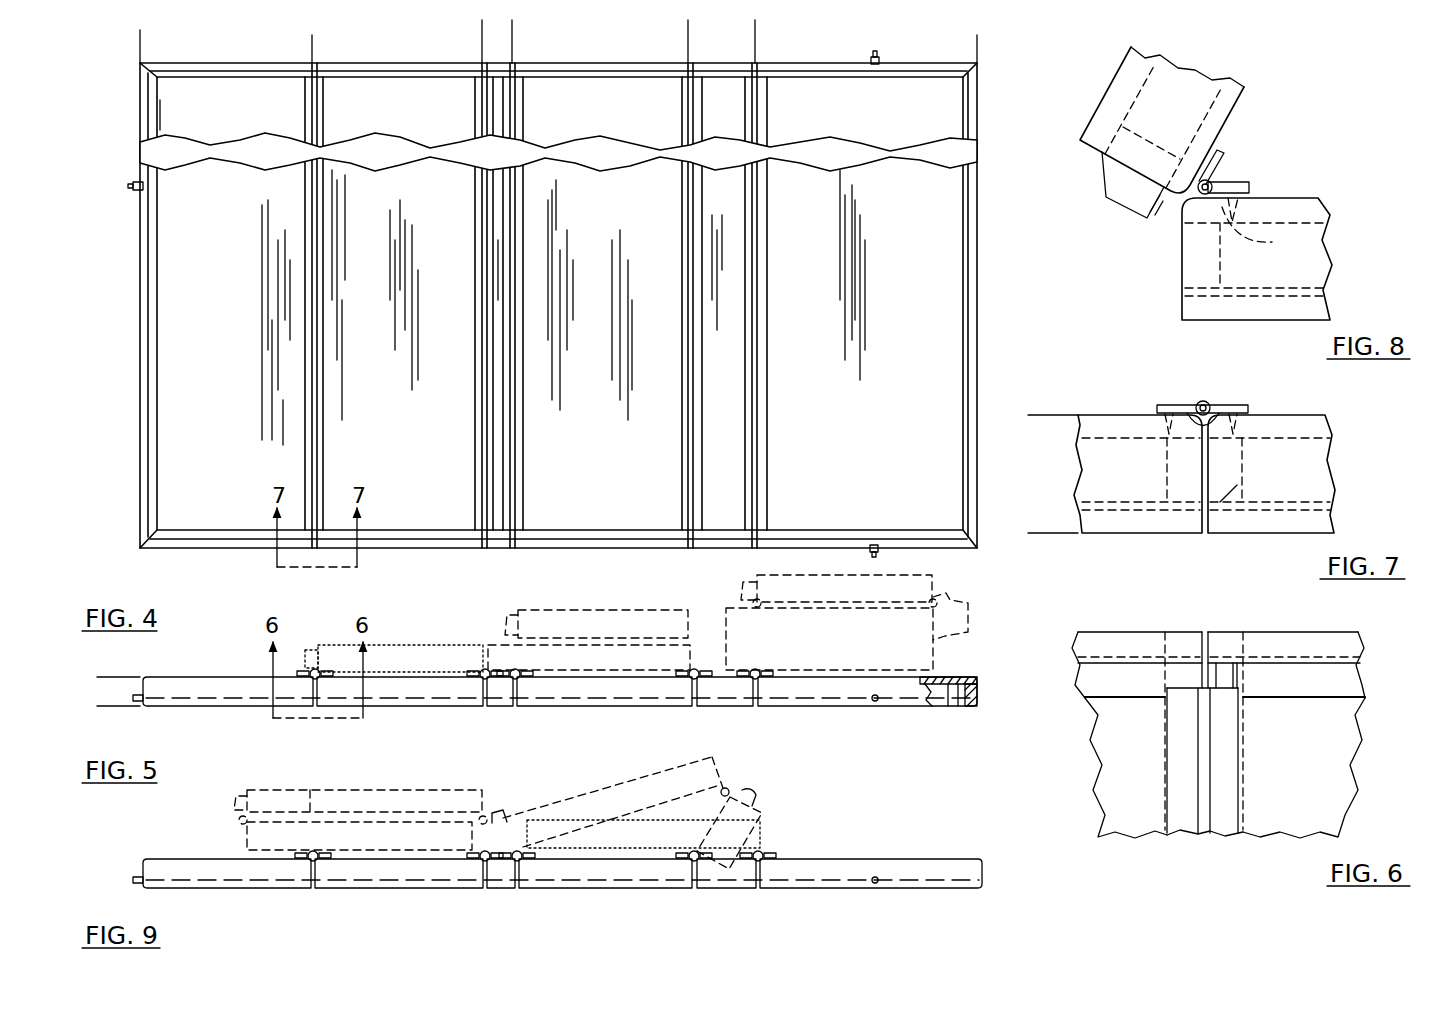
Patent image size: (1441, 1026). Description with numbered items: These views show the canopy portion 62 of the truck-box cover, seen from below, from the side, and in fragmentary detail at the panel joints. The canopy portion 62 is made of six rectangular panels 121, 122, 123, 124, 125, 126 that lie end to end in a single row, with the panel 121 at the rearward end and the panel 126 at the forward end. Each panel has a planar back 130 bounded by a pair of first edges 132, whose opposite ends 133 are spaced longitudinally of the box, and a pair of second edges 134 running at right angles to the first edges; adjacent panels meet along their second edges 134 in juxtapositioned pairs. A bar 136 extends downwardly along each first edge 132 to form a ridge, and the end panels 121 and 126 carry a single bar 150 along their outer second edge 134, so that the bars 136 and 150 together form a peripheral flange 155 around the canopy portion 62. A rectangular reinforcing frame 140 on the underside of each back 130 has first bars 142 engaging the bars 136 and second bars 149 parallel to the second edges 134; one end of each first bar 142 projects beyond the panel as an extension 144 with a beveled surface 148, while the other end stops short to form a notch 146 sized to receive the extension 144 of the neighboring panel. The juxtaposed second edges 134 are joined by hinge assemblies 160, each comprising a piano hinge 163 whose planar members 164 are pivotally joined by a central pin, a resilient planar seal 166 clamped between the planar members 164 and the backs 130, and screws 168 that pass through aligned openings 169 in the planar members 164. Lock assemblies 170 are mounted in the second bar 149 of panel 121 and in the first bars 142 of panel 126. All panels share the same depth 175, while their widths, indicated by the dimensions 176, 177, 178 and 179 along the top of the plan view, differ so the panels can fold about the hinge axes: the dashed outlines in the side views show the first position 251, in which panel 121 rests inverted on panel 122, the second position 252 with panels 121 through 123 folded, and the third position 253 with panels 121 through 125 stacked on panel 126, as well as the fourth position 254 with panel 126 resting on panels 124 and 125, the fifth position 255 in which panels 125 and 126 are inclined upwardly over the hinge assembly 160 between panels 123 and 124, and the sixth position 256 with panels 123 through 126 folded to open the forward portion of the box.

In FIG. 8, the canopy portion 62 is at (1006, 272).
In FIG. 4, the panel 121 is at (250, 548).
In FIG. 4, the panel 122 is at (427, 547).
In FIG. 4, the panel 123 is at (505, 548).
In FIG. 4, the panel 124 is at (622, 548).
In FIG. 4, the panel 125 is at (742, 547).
In FIG. 4, the panel 126 is at (840, 540).
In FIG. 4, the planar back 130 is at (239, 309).
In FIG. 5, the planar back 130 is at (945, 707).
In FIG. 7, the planar back 130 is at (1295, 413).
In FIG. 6, the planar back 130 is at (1145, 758).
In FIG. 4, the first edges 132 is at (293, 67).
In FIG. 4, the opposite ends 133 is at (192, 535).
In FIG. 5, the second edges 134 is at (312, 698).
In FIG. 4, the bars 136 is at (348, 70).
In FIG. 7, the bars 136 is at (1142, 479).
In FIG. 6, the bars 136 is at (1103, 637).
In FIG. 4, the reinforcing frame 140 is at (470, 214).
In FIG. 4, the first bars 142 is at (803, 78).
In FIG. 6, the first bars 142 is at (1112, 677).
In FIG. 5, the extension 144 is at (310, 655).
In FIG. 8, the extension 144 is at (1103, 173).
In FIG. 6, the extension 144 is at (1200, 680).
In FIG. 6, the notch 146 is at (1232, 680).
In FIG. 8, the beveled surface 148 is at (1128, 185).
In FIG. 4, the second bars 149 is at (965, 273).
In FIG. 5, the second bars 149 is at (961, 690).
In FIG. 6, the second bars 149 is at (1228, 815).
In FIG. 4, the bar 150 is at (140, 398).
In FIG. 5, the bar 150 is at (983, 693).
In FIG. 4, the flange 155 is at (148, 125).
In FIG. 5, the hinge assembly 160 is at (535, 674).
In FIG. 9, the hinge assembly 160 is at (317, 871).
In FIG. 8, the hinge assembly 160 is at (1224, 172).
In FIG. 7, the piano hinge 163 is at (1200, 401).
In FIG. 7, the planar members 164 is at (1187, 405).
In FIG. 7, the seal 166 is at (1160, 412).
In FIG. 8, the hinge leaf 168 is at (1220, 172).
In FIG. 8, the openings 169 is at (1258, 243).
In FIG. 4, the lock assemblies 170 is at (133, 186).
In FIG. 5, the first predetermined distance 175 is at (107, 652).
In FIG. 7, the first predetermined distance 175 is at (1043, 415).
In FIG. 4, the panel width 176 is at (312, 45).
In FIG. 4, the narrow panel width 177 is at (547, 30).
In FIG. 4, the narrow panel width 178 is at (795, 28).
In FIG. 4, the end panel width 179 is at (977, 45).
In FIG. 5, the first position 251 is at (440, 659).
In FIG. 5, the second position 252 is at (640, 657).
In FIG. 5, the third position 253 is at (858, 662).
In FIG. 9, the fourth position 254 is at (772, 828).
In FIG. 9, the fifth position 255 is at (747, 777).
In FIG. 9, the sixth position 256 is at (230, 848).